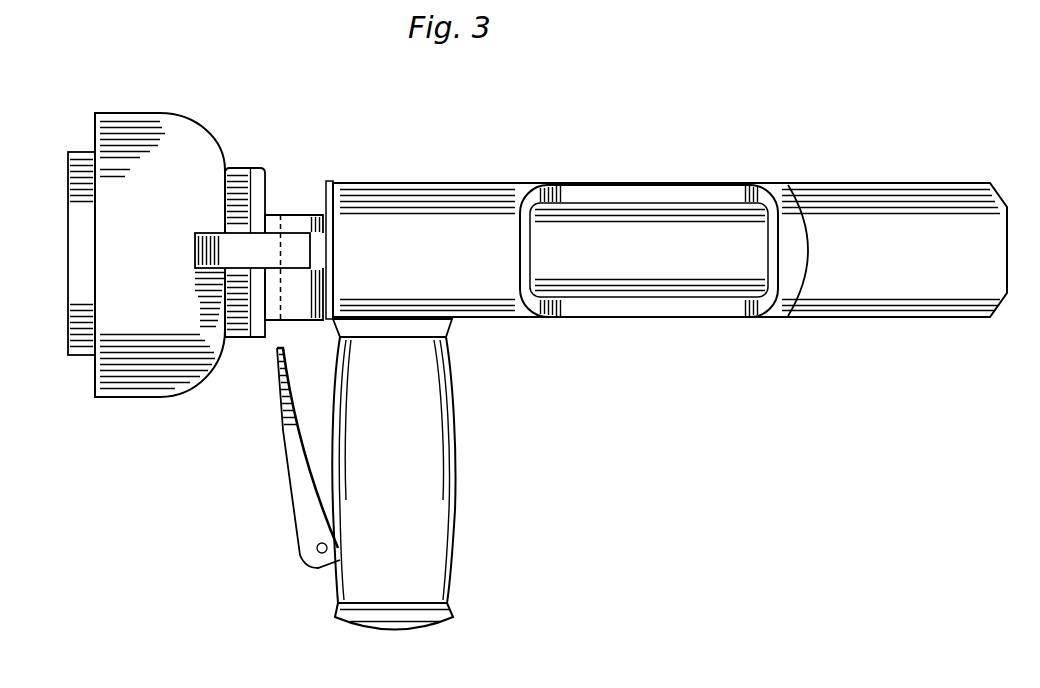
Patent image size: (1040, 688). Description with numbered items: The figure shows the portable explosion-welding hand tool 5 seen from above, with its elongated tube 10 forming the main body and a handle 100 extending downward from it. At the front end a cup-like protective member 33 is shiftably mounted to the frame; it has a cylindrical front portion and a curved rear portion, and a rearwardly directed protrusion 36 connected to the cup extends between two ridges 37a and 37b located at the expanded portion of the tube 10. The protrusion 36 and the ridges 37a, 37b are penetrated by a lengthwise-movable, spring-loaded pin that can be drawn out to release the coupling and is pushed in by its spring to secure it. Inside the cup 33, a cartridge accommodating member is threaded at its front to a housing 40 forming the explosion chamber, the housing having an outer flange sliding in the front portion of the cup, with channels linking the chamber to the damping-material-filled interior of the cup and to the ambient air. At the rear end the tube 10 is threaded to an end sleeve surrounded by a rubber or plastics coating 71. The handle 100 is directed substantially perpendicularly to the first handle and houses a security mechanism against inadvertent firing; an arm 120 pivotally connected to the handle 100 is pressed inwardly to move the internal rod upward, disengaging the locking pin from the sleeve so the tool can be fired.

The dispensing gun 5 is at (427, 632).
The tube 10 is at (600, 215).
The cup-like protective member 33 is at (183, 144).
The rearwardly directed protrusion 36 is at (236, 245).
The ridge 37a is at (302, 222).
The ridge 37b is at (290, 316).
The housing 40 is at (75, 290).
The coating 71 is at (878, 193).
The handle 100 is at (435, 455).
The arm 120 is at (290, 458).